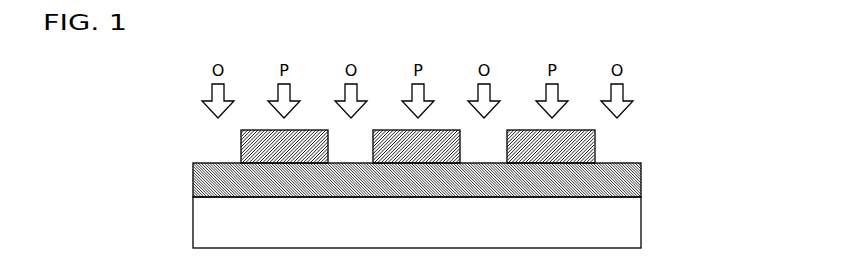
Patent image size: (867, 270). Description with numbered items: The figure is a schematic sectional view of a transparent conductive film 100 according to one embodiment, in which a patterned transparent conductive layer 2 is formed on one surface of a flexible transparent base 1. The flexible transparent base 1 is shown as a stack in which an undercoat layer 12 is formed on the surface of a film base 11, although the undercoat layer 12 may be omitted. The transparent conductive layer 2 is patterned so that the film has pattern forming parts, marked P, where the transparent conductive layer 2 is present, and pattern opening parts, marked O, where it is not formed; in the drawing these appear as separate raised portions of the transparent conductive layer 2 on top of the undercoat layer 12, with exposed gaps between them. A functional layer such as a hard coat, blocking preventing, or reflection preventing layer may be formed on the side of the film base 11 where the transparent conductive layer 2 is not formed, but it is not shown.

The transparent conductive film 100 is at (189, 127).
The transparent conductive layer 2 is at (588, 140).
The flexible transparent base 1 is at (697, 180).
The undercoat layer 12 is at (637, 182).
The film base 11 is at (635, 220).